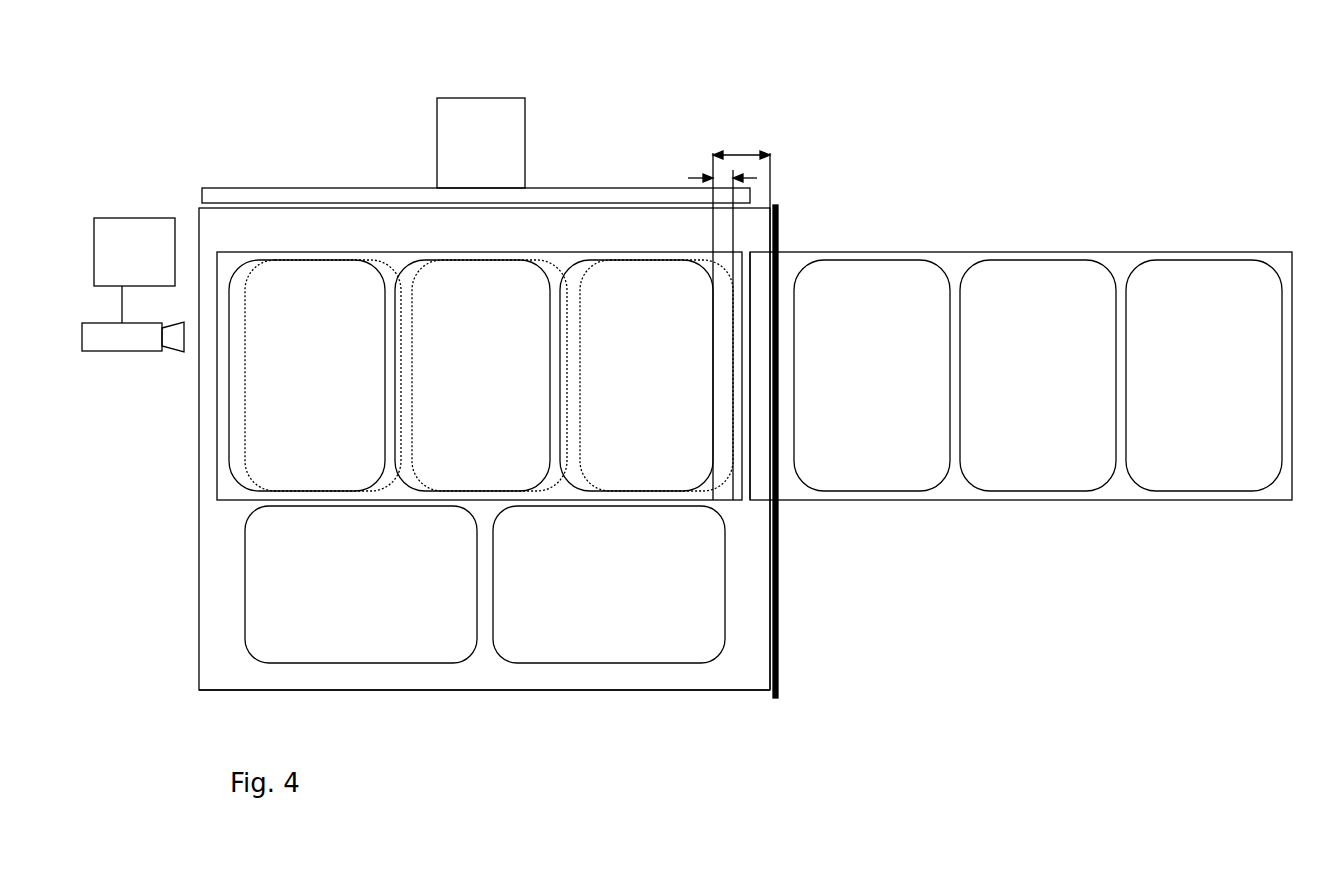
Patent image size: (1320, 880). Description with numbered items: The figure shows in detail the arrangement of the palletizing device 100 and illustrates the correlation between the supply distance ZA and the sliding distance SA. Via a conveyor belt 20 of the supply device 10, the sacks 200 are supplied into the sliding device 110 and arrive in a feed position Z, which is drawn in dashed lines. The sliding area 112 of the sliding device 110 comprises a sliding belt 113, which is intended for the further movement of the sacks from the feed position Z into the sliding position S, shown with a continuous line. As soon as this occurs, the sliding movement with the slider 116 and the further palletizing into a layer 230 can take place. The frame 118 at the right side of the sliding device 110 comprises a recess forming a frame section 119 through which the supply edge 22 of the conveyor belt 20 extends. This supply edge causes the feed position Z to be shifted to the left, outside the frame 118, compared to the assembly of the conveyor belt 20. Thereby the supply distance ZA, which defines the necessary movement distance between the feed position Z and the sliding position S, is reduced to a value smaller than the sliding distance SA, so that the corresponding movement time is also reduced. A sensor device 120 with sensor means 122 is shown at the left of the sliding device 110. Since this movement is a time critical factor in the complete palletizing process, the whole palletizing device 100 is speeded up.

The supply device 10 is at (1090, 140).
The conveyor belt 20 is at (1174, 251).
The supply edge 22 is at (770, 503).
The palletizing device 100 is at (284, 153).
The sliding device 110 is at (560, 136).
The sliding area 112 is at (620, 685).
The sliding belt 113 is at (237, 506).
The slider 116 is at (443, 133).
The frame 118 is at (778, 662).
The frame section 119 is at (788, 261).
The sensor device 120 is at (119, 205).
The sensor means 122 is at (135, 345).
The sack 200 is at (388, 650).
The layer 230 is at (514, 678).
The sliding position S is at (229, 440).
The feed position Z is at (718, 503).
The supply distance ZA is at (716, 172).
The sliding distance SA is at (741, 412).